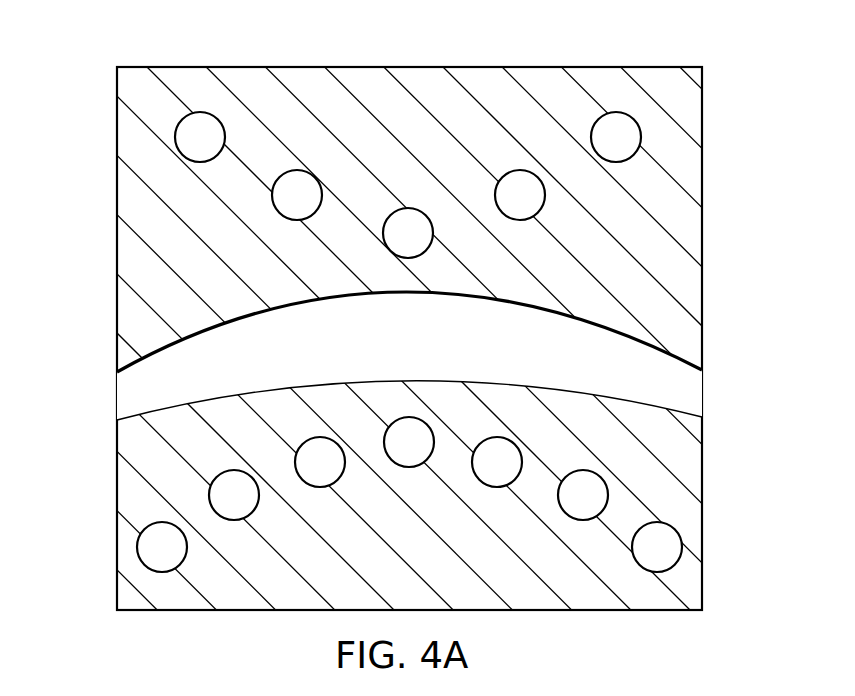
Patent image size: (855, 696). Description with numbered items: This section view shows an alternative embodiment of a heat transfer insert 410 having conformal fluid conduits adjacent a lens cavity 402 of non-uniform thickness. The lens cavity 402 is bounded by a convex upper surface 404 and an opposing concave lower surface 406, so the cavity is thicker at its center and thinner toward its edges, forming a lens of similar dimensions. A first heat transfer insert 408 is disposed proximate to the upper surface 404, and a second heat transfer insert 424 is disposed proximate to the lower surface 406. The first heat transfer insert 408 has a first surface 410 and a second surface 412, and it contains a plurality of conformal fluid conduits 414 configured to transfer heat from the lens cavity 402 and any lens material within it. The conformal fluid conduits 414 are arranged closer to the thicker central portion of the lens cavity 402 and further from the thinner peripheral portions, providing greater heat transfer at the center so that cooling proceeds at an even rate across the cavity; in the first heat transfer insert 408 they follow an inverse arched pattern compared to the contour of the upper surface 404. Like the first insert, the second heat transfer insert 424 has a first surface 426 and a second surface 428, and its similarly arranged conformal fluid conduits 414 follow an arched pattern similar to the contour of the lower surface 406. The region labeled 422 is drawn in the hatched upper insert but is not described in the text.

The lens cavity 402 is at (123, 398).
The upper surface 404 is at (153, 351).
The lower surface 406 is at (141, 418).
The first heat transfer insert 408 is at (125, 82).
The heat transfer insert 410 is at (592, 67).
The second surface 412 is at (678, 363).
The conformal fluid conduits 414 is at (176, 137).
The upper cladding region 422 is at (693, 167).
The second heat transfer insert 424 is at (121, 487).
The first surface 426 is at (677, 411).
The second surface 428 is at (182, 610).